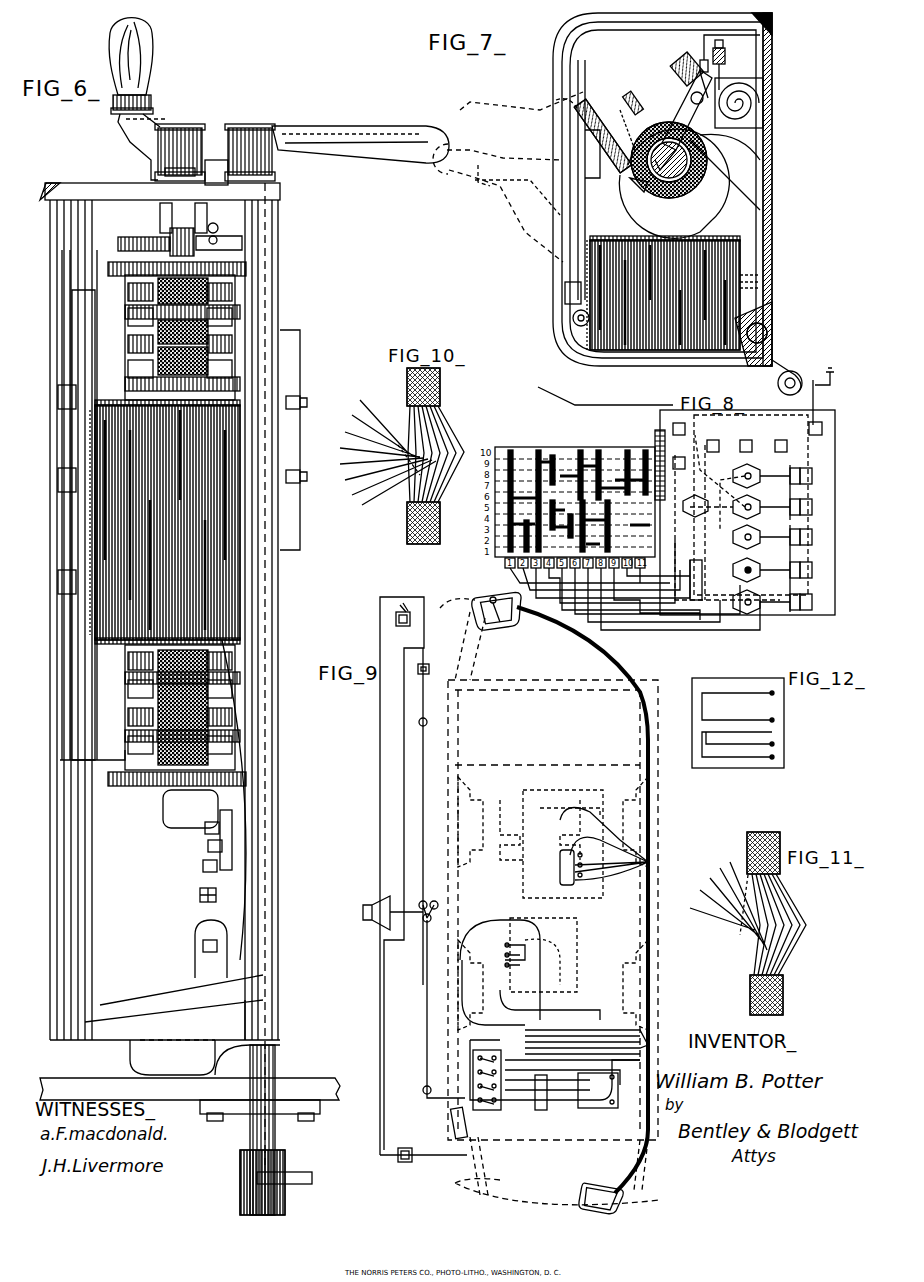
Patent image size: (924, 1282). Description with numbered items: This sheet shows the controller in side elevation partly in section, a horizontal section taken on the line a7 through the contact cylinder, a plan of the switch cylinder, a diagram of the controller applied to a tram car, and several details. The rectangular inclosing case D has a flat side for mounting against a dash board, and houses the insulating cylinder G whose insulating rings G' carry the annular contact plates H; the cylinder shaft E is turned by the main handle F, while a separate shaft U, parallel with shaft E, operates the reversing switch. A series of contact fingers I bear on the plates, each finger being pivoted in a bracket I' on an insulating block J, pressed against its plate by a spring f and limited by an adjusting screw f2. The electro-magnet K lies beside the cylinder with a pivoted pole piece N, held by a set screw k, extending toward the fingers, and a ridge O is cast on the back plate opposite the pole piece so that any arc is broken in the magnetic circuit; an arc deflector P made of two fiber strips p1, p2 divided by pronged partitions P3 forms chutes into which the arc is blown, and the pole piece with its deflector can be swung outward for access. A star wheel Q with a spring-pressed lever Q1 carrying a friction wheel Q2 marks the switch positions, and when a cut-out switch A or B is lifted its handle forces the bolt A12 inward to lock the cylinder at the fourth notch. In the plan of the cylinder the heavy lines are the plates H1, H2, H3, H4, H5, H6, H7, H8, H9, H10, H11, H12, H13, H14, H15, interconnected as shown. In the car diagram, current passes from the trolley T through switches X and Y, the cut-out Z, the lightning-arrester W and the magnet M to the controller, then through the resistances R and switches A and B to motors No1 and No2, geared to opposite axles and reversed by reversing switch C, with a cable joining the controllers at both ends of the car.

In FIG. 6, the main handle F is at (152, 50).
In FIG. 6, the cylinder shaft E is at (181, 125).
In FIG. 7, the cylinder shaft E is at (630, 180).
In FIG. 6, the reversing switch shaft U is at (276, 1062).
In FIG. 7, the reversing switch shaft U is at (772, 328).
In FIG. 6, the star wheel Q is at (132, 244).
In FIG. 6, the friction wheel Q2 is at (172, 244).
In FIG. 6, the spring pressed lever Q1 is at (205, 236).
In FIG. 6, the contact finger I is at (171, 337).
In FIG. 7, the contact finger I is at (674, 120).
In FIG. 6, the insulating cylinder G is at (196, 311).
In FIG. 7, the insulating cylinder G is at (662, 169).
In FIG. 6, the insulating rings G' is at (198, 361).
In FIG. 7, the insulating rings G' is at (701, 175).
In FIG. 6, the contact plate H is at (210, 320).
In FIG. 7, the contact plate H is at (712, 220).
In FIG. 6, the electro-magnet K is at (215, 533).
In FIG. 7, the electro-magnet K is at (666, 345).
In FIG. 6, the set screw k is at (67, 532).
In FIG. 7, the set screw k is at (565, 296).
In FIG. 6, the inclosing case D is at (62, 590).
In FIG. 7, the inclosing case D is at (770, 40).
In FIG. 6, the pivoted pole piece N is at (82, 633).
In FIG. 7, the pivoted pole piece N is at (560, 280).
In FIG. 6, the section line a7 is at (255, 210).
In FIG. 6, the bolt A12 is at (205, 830).
In FIG. 6, the cut-out switch B is at (200, 945).
In FIG. 8, the cut-out switch B is at (805, 490).
In FIG. 7, the ridge O is at (762, 146).
In FIG. 7, the spring f is at (668, 80).
In FIG. 7, the bracket I' is at (720, 66).
In FIG. 7, the adjusting screw f2 is at (716, 48).
In FIG. 7, the insulating block J is at (741, 95).
In FIG. 7, the partitions P3 is at (600, 98).
In FIG. 7, the fiber strip p1 is at (633, 93).
In FIG. 7, the fiber strip p2 is at (500, 215).
In FIG. 7, the arc deflector P is at (497, 104).
In FIG. 7, the trolley T is at (596, 388).
In FIG. 9, the trolley T is at (393, 907).
In FIG. 8, the contact block H1 is at (505, 497).
In FIG. 8, the contact block H2 is at (523, 536).
In FIG. 8, the contact plate H3 is at (526, 501).
In FIG. 8, the contact plate H4 is at (542, 467).
In FIG. 8, the contact plate H5 is at (559, 515).
In FIG. 8, the contact plate H6 is at (566, 471).
In FIG. 8, the contact plate H7 is at (595, 471).
In FIG. 8, the contact plate H8 is at (598, 462).
In FIG. 8, the contact block H9 is at (630, 470).
In FIG. 8, the contact plate H10 is at (590, 508).
In FIG. 8, the contact plate H11 is at (604, 526).
In FIG. 8, the contact plate H12 is at (628, 465).
In FIG. 8, the contact block H13 is at (582, 544).
In FIG. 8, the contact plate H14 is at (630, 481).
In FIG. 8, the contact plate H15 is at (648, 470).
In FIG. 8, the magnet M is at (652, 459).
In FIG. 8, the cut-out switch A is at (805, 553).
In FIG. 12, the resistance R is at (747, 723).
In FIG. 9, the resistance R is at (598, 1090).
In FIG. 9, the switch X is at (402, 876).
In FIG. 9, the switch Y is at (423, 1147).
In FIG. 9, the motor No. 1 No1 is at (585, 844).
In FIG. 9, the motor No. 2 No2 is at (518, 955).
In FIG. 9, the reversing switch C is at (488, 1112).
In FIG. 9, the cut-out Z is at (453, 1120).
In FIG. 9, the lightning-arrester W is at (549, 1092).